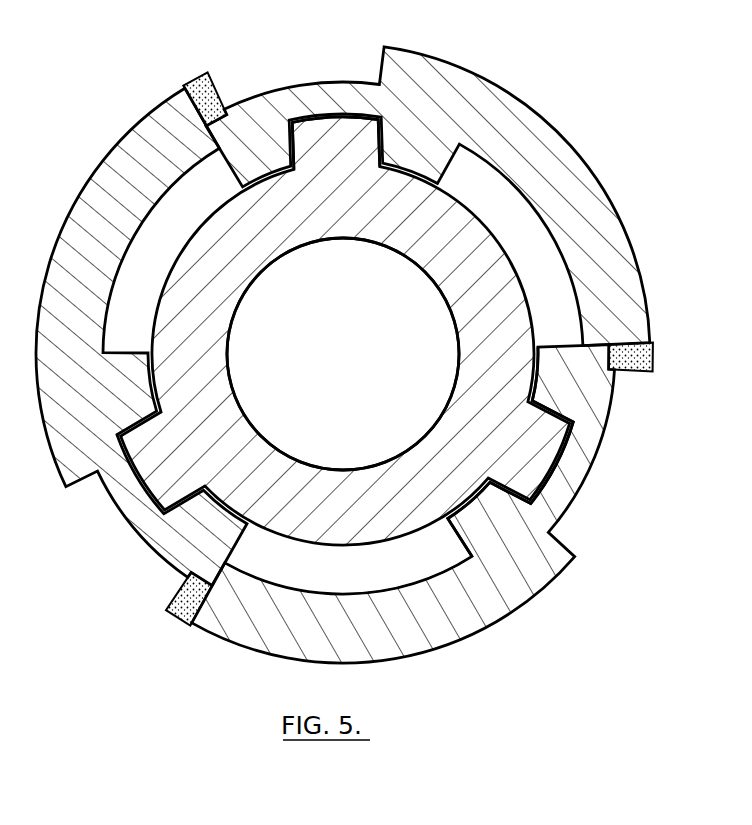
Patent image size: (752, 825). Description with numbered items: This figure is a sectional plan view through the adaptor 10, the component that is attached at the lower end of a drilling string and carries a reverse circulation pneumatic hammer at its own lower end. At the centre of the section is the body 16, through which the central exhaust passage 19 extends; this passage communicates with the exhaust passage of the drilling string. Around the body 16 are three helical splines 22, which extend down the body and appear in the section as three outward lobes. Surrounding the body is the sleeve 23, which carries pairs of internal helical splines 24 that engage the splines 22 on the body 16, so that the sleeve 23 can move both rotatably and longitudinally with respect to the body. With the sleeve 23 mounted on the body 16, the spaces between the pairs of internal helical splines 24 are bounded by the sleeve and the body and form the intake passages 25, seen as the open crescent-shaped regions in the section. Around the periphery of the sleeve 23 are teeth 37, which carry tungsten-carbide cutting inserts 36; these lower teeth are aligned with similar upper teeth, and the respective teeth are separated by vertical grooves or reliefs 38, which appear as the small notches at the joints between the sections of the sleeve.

The adaptor 10 is at (560, 72).
The body 16 is at (511, 264).
The central exhaust passage 19 is at (355, 367).
The helical splines 22 is at (330, 128).
The sleeve 23 is at (529, 604).
The internal helical splines 24 is at (506, 513).
The intake passages 25 is at (157, 287).
The tungsten-carbide cutting inserts 36 is at (646, 373).
The teeth 37 is at (622, 336).
The vertical grooves or reliefs 38 is at (140, 535).